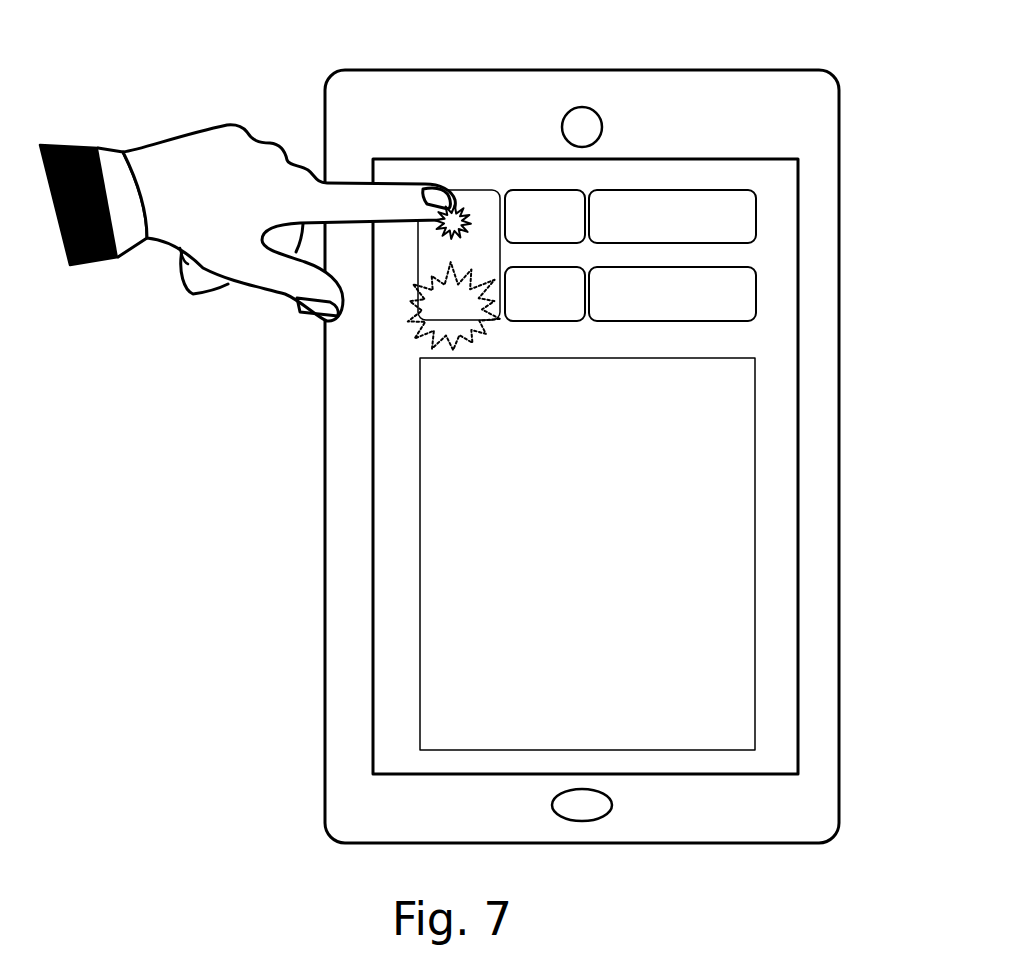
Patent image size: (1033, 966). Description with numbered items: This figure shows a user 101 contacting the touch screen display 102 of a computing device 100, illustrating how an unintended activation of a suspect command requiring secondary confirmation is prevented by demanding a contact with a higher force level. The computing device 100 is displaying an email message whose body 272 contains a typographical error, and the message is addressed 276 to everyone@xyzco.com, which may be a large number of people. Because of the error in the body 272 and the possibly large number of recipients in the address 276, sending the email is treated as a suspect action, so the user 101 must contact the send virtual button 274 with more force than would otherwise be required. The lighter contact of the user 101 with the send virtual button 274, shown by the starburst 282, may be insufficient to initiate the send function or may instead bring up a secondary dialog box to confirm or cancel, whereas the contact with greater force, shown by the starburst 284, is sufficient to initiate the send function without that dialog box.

The computing device 100 is at (813, 53).
The user 101 is at (197, 132).
The touch screen display 102 is at (798, 720).
The body of the message 272 is at (532, 491).
The send virtual button 274 is at (458, 207).
The address of the email message 276 is at (756, 220).
The starburst 282 is at (465, 207).
The starburst 284 is at (417, 333).